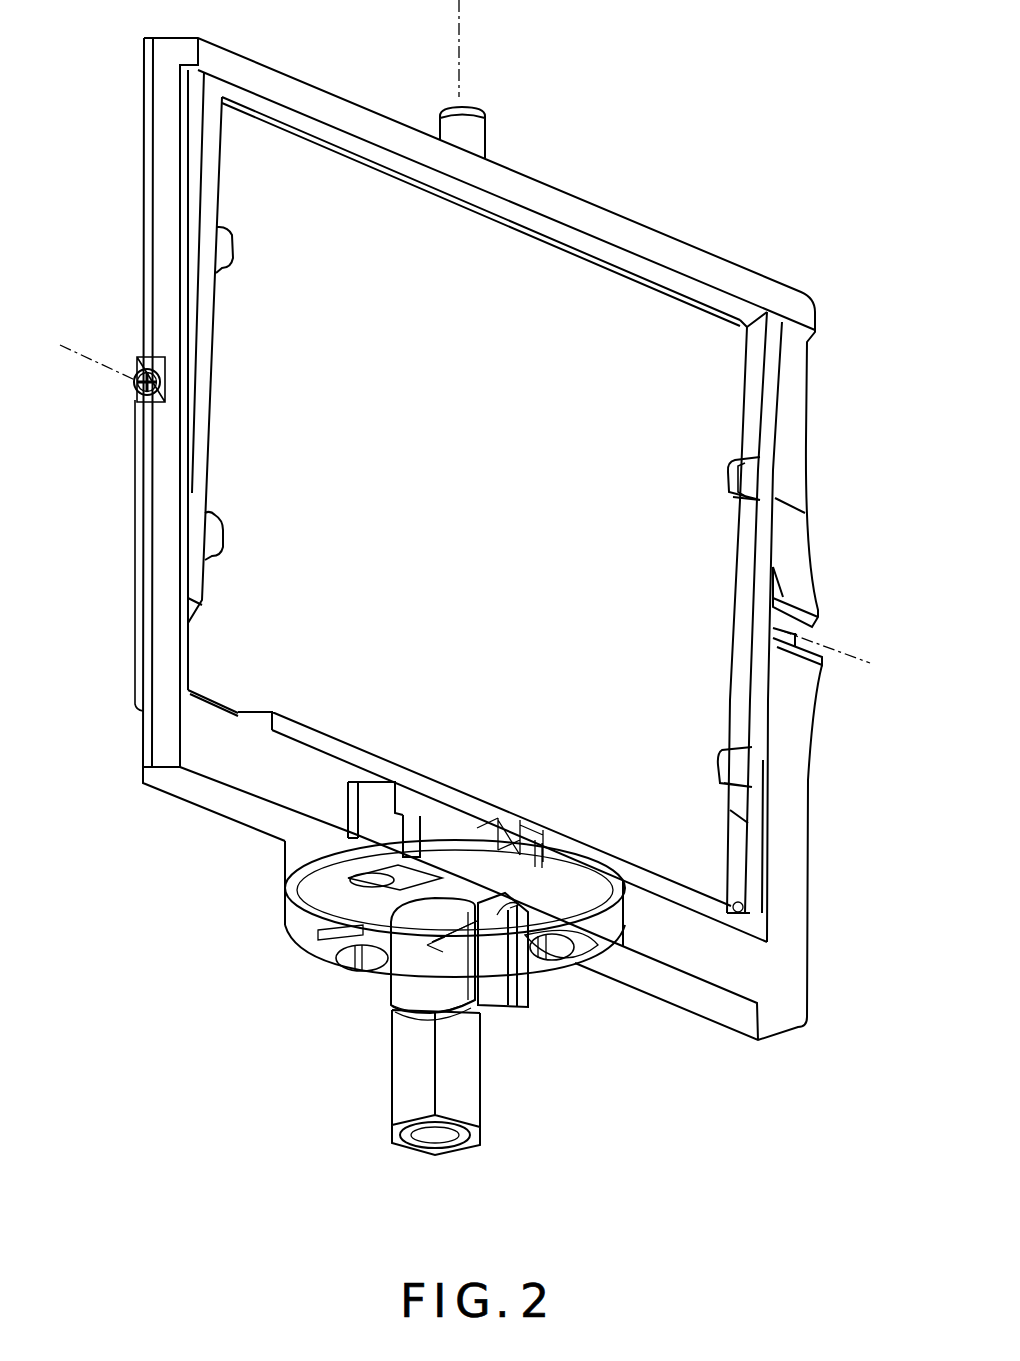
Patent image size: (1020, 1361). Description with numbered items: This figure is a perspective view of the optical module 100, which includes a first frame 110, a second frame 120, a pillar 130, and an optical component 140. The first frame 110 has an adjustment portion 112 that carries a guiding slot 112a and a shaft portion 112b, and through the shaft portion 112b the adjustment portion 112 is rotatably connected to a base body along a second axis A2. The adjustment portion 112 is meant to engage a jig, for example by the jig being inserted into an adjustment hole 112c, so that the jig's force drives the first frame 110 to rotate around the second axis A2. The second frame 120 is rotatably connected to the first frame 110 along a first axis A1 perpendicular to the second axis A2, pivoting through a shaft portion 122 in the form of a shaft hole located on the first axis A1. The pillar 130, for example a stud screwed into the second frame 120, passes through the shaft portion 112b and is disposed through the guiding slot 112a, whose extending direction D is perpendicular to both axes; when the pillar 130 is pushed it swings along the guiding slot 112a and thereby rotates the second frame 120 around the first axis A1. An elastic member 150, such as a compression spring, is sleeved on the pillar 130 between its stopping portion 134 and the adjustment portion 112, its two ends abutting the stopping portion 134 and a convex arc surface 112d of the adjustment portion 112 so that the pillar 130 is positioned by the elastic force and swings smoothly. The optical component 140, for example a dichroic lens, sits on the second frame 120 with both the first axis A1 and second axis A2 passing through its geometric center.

The optical module 100 is at (884, 1088).
The first frame 110 is at (793, 945).
The adjustment portion 112 is at (604, 905).
The guiding slot 112a is at (560, 905).
The shaft portion 112b is at (405, 967).
The adjustment hole 112c is at (365, 899).
The convex arc surface 112d is at (515, 975).
The second frame 120 is at (755, 847).
The shaft portion 122 is at (202, 393).
The pillar 130 is at (478, 1087).
The stopping portion 134 is at (473, 1083).
The optical component 140 is at (717, 563).
The elastic member 150 is at (450, 1125).
The first axis A1 is at (95, 356).
The second axis A2 is at (460, 28).
The extending direction D is at (427, 1007).